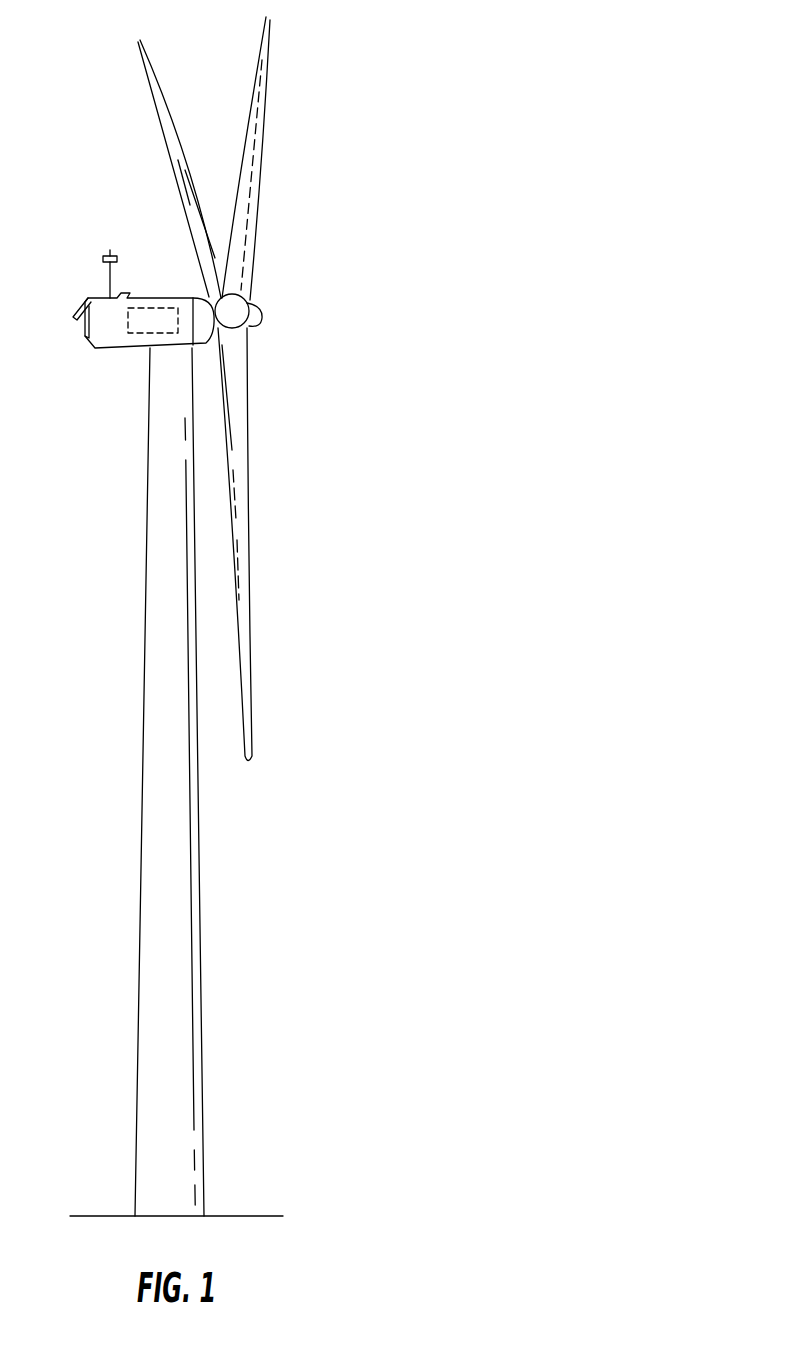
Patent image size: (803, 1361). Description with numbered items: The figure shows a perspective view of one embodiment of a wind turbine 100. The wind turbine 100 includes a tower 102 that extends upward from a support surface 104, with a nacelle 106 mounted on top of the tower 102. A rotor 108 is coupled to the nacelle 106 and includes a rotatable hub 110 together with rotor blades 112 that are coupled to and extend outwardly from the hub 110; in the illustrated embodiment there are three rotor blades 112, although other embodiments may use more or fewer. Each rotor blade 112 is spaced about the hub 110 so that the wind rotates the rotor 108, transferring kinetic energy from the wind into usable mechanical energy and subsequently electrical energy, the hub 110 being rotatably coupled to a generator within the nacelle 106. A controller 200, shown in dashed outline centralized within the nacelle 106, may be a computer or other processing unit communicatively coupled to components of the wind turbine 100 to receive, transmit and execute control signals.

The wind turbine 100 is at (430, 140).
The tower 102 is at (180, 853).
The support surface 104 is at (245, 1216).
The nacelle 106 is at (118, 348).
The rotor 108 is at (302, 276).
The rotatable hub 110 is at (262, 318).
The rotor blade 112 is at (248, 138).
The controller 200 is at (156, 307).